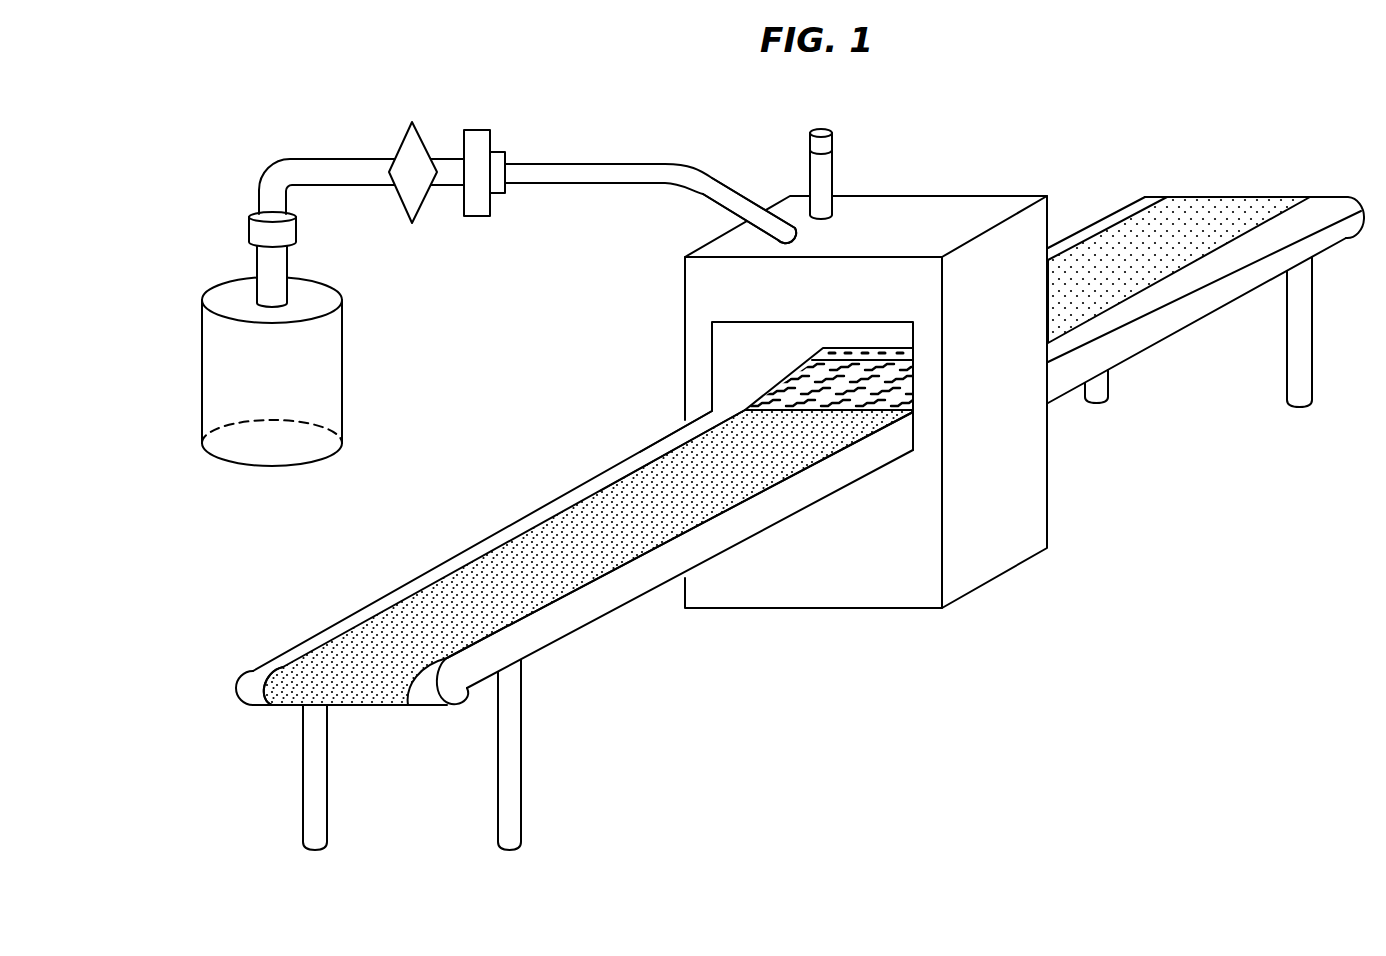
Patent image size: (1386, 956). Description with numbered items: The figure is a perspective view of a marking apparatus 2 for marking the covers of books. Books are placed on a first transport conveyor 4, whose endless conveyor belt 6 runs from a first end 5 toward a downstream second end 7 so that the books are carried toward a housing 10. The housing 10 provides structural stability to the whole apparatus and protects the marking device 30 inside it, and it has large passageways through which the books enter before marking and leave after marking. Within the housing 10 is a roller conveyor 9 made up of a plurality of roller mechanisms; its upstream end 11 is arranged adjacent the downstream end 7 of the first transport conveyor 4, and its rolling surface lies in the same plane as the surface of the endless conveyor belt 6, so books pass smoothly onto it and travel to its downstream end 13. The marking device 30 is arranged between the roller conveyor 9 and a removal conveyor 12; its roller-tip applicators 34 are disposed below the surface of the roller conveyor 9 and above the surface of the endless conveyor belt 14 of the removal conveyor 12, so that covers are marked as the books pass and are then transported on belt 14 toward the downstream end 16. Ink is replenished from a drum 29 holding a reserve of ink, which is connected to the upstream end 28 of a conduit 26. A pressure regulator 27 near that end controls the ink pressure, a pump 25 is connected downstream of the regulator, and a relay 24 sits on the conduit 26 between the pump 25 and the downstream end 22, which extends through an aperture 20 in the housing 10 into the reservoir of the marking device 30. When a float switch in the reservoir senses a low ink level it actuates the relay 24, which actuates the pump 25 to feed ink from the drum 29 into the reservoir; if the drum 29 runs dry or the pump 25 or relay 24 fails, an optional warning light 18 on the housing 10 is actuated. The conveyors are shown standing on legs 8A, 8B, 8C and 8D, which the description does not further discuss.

The marking apparatus 2 is at (962, 118).
The first transport conveyor 4 is at (427, 583).
The first end 5 is at (290, 670).
The endless conveyor belt 6 is at (378, 637).
The second end 7 is at (757, 430).
The conveyor support leg 8A is at (303, 795).
The conveyor support leg 8B is at (498, 790).
The conveyor support leg 8C is at (1312, 313).
The conveyor support leg 8D is at (1108, 390).
The roller conveyor 9 is at (790, 394).
The housing 10 is at (1027, 197).
The upstream end 11 is at (733, 407).
The removal conveyor 12 is at (1098, 221).
The downstream end 13 is at (805, 368).
The endless conveyor belt 14 is at (1153, 204).
The downstream end 16 is at (1232, 197).
The warning light 18 is at (832, 172).
The aperture 20 is at (782, 232).
The downstream end 22 is at (702, 171).
The relay 24 is at (480, 130).
The pump 25 is at (402, 142).
The conduit 26 is at (330, 158).
The pressure regulator 27 is at (297, 226).
The upstream end 28 is at (257, 262).
The drum 29 is at (202, 380).
The marking device 30 is at (815, 348).
The roller-tip applicator 34 is at (865, 360).